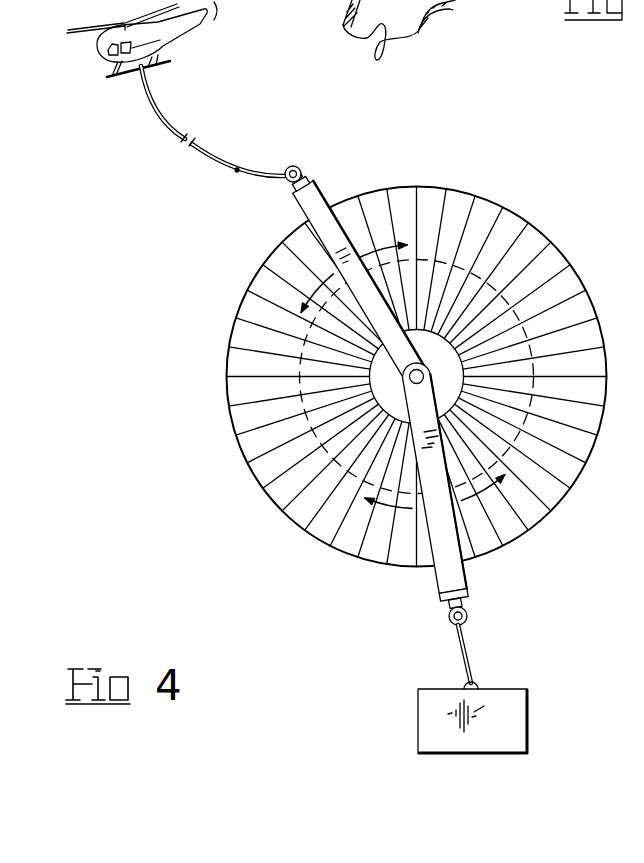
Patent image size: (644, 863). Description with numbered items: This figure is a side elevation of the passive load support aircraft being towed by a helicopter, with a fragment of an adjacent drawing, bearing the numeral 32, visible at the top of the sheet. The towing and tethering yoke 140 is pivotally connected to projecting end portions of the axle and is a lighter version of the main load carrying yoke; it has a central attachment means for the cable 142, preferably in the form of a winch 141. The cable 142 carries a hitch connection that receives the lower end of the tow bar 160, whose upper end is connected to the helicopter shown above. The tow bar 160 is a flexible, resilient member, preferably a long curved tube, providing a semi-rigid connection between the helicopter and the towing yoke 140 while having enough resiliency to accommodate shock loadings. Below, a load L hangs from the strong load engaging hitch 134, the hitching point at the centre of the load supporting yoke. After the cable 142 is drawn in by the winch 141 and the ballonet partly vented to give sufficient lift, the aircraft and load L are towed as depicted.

The load engaging hitch 134 is at (468, 617).
The towing and tethering yoke 140 is at (317, 192).
The winch 141 is at (301, 170).
The cable 142 is at (253, 175).
The tow bar 160 is at (211, 163).
The load L is at (514, 689).
The fragment of adjacent figure 32 is at (447, 8).